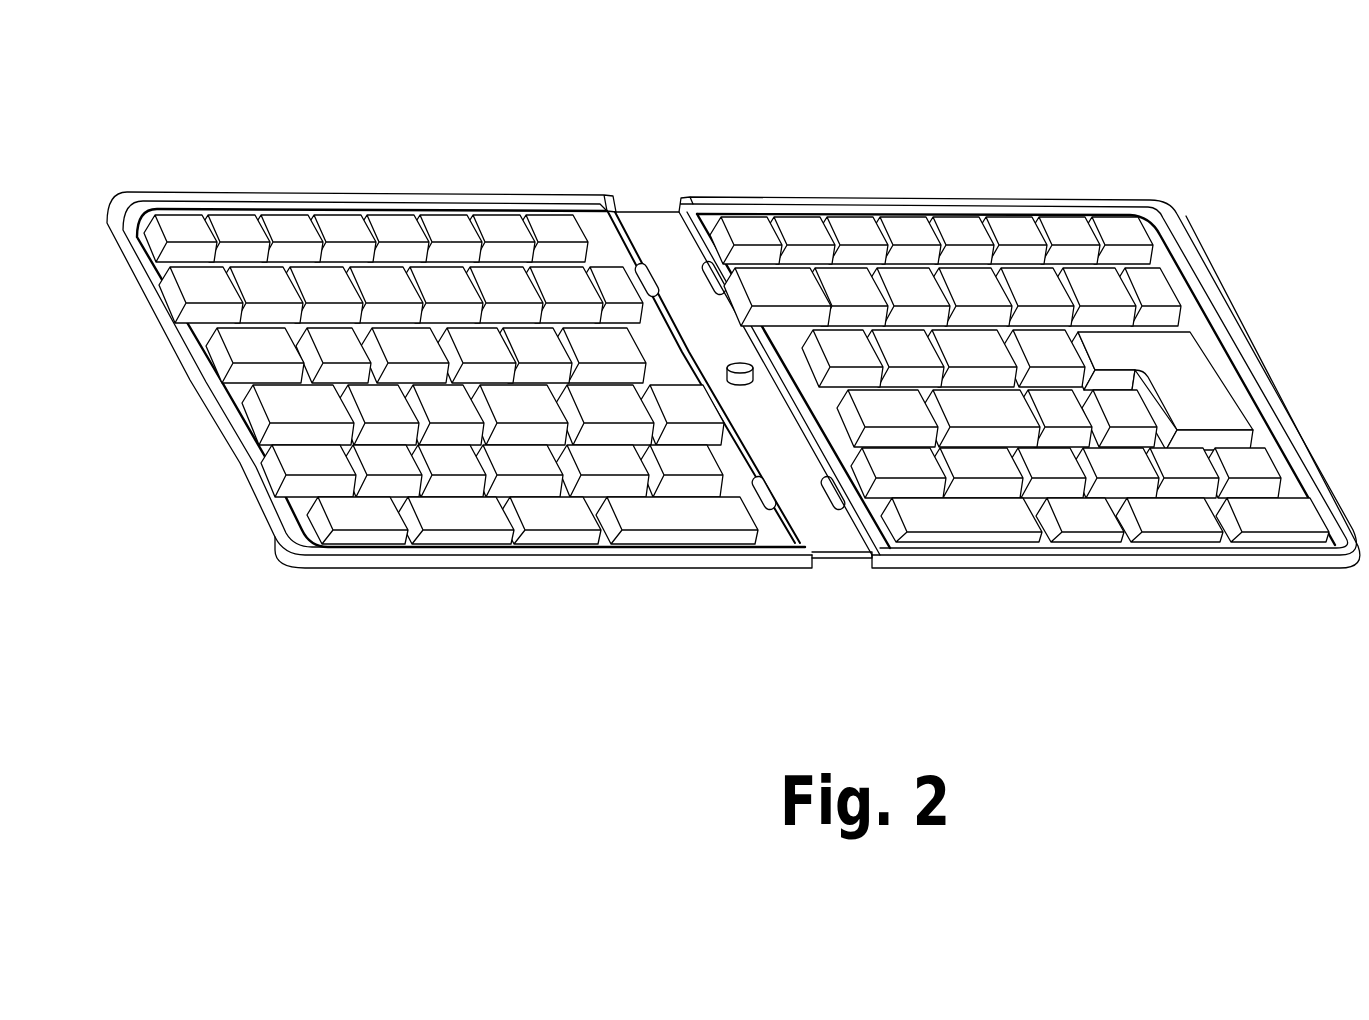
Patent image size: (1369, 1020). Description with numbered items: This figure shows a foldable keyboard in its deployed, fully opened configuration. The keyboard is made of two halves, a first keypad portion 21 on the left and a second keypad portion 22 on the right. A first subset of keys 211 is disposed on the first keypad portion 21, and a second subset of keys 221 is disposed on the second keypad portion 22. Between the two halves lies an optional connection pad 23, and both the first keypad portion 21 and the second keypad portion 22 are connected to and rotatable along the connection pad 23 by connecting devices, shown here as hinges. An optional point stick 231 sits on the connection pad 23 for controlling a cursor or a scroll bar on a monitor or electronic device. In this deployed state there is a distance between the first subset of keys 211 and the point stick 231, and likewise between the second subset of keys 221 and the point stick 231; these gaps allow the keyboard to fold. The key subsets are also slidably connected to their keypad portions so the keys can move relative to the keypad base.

The first keypad portion 21 is at (459, 346).
The first subset of keys 211 is at (402, 293).
The second keypad portion 22 is at (1019, 336).
The second subset of keys 221 is at (1145, 362).
The connection pad 23 is at (746, 305).
The point stick 231 is at (741, 363).